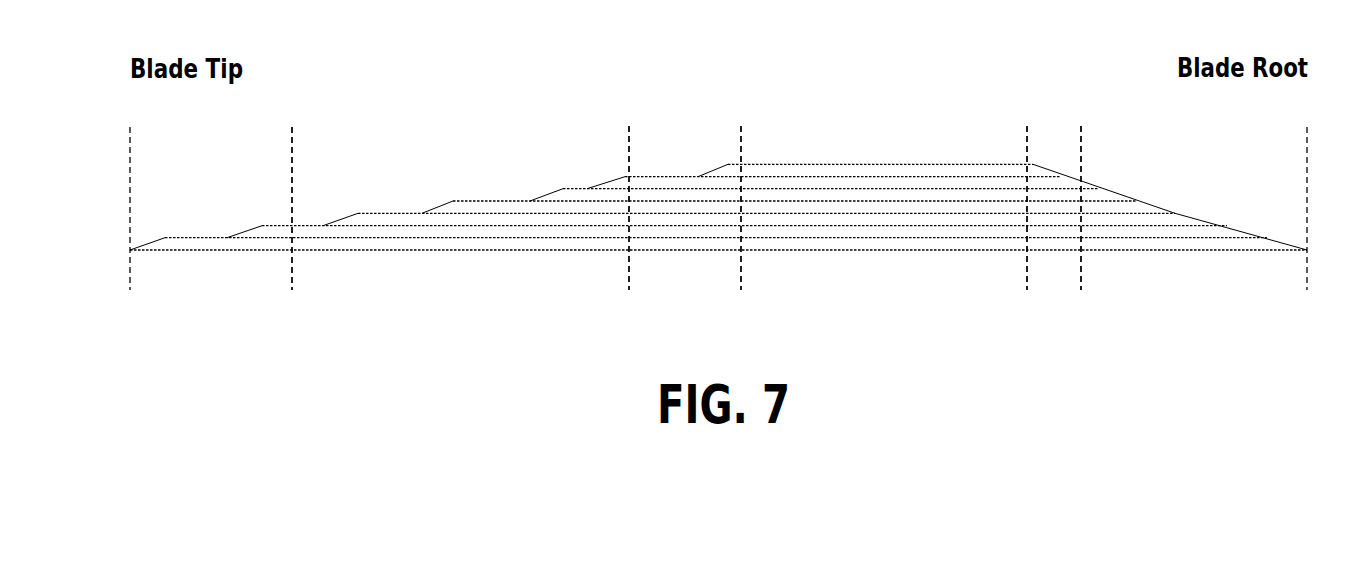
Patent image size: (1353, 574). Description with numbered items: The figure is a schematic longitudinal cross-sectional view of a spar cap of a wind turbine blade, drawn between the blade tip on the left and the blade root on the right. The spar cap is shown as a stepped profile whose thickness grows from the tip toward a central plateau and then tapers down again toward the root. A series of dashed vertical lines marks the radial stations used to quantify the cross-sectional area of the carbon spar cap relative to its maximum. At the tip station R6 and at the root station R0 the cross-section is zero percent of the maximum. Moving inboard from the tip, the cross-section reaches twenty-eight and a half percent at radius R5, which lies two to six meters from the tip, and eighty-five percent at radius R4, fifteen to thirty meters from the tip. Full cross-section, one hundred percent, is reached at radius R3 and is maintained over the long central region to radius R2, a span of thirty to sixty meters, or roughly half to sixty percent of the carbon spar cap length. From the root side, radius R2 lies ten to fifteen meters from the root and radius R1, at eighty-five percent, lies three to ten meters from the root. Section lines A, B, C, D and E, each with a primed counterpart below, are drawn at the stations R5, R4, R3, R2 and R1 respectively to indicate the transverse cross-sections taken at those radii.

The radius R0 is at (1306, 188).
The radius R1 is at (1084, 187).
The radius R2 is at (1029, 187).
The radius R3 is at (743, 186).
The radius R4 is at (631, 186).
The radius R5 is at (294, 189).
The radius R6 is at (142, 190).
The section line A-A' A is at (301, 225).
The section line B-B' B is at (639, 224).
The section line C-C' C is at (751, 224).
The section line D-D' D is at (1034, 224).
The section line E-E' E is at (1090, 224).